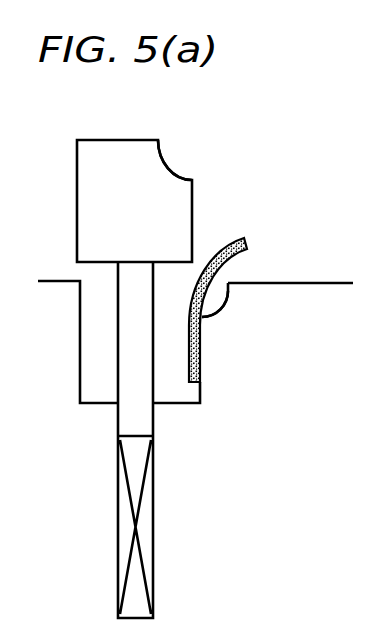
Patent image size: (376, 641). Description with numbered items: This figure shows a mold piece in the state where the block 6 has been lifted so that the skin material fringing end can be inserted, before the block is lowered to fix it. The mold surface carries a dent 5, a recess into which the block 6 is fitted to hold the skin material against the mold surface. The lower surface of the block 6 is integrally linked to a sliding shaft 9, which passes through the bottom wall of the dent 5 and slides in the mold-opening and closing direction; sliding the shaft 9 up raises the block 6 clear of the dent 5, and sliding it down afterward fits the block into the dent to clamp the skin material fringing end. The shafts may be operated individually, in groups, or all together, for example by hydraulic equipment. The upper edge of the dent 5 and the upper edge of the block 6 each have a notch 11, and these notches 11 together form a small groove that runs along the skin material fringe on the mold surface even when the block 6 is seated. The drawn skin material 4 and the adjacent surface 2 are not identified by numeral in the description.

The base member 2 is at (286, 297).
The flexible tube 4 is at (229, 245).
The dent 5 is at (95, 333).
The block 6 is at (100, 187).
The sliding shaft 9 is at (147, 515).
The notch 11 is at (165, 159).